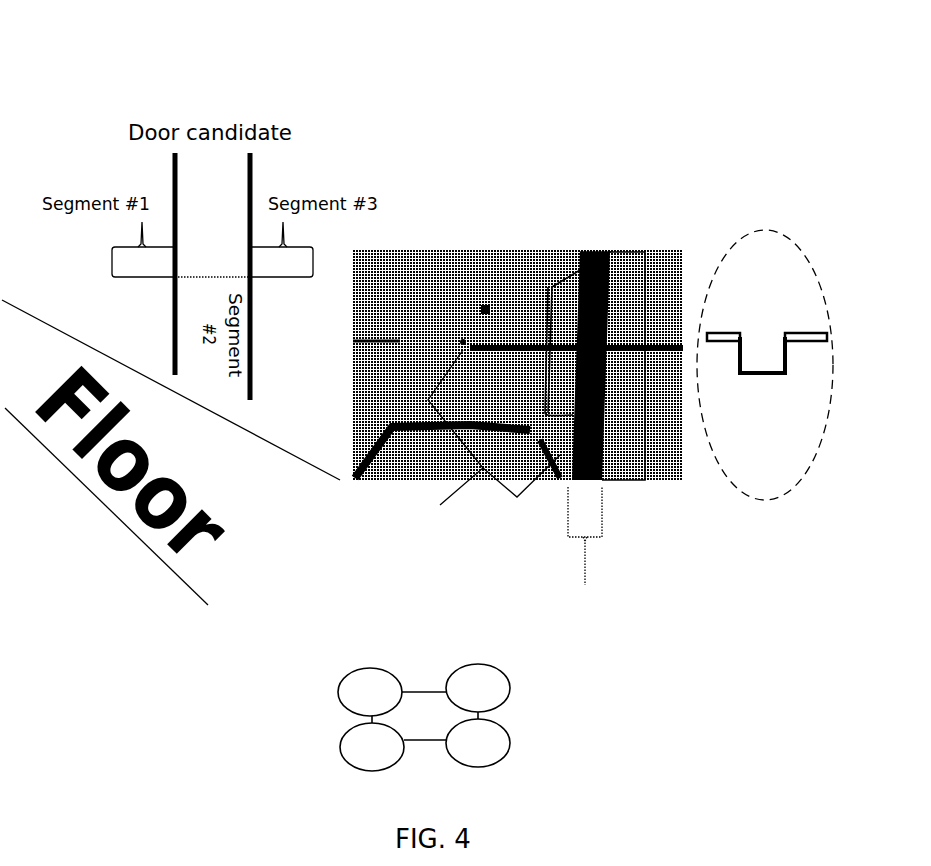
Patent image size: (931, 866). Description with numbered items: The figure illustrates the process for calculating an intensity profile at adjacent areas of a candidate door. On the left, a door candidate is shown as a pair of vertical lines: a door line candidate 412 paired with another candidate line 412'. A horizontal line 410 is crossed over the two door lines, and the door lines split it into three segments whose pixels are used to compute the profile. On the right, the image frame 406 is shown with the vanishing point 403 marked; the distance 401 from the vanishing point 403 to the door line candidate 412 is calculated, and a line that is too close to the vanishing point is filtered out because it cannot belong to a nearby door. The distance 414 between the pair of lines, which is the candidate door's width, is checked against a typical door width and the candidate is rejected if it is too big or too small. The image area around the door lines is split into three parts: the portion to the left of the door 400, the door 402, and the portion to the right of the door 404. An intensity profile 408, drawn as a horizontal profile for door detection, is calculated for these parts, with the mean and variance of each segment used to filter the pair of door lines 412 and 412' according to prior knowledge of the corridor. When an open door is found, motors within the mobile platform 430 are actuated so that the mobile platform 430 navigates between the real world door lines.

The portion to the left of the door 400 is at (565, 273).
The distance from the vanishing point to the door line candidate 401 is at (474, 442).
The door 402 is at (587, 265).
The vanishing point 403 is at (463, 340).
The portion to the right of the door 404 is at (623, 265).
The image frame 406 is at (397, 250).
The intensity profile 408 is at (763, 227).
The horizontal line 410 is at (145, 282).
The door line candidate 412 is at (331, 314).
The candidate line 412' is at (486, 330).
The distance between the pair of lines 414 is at (584, 554).
The mobile platform 430 is at (413, 713).